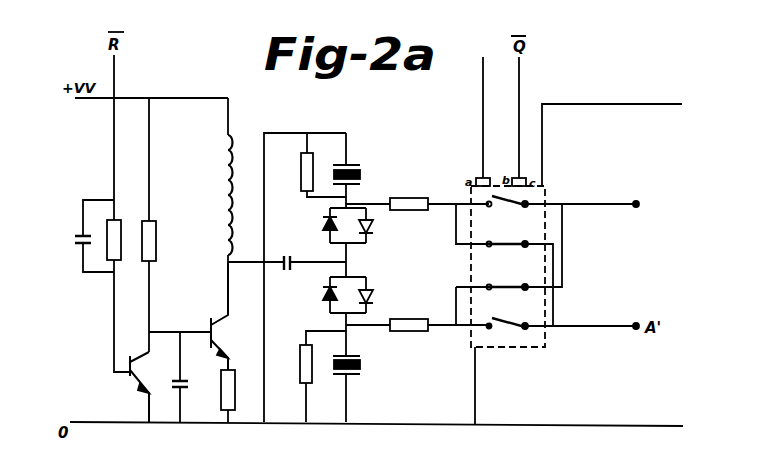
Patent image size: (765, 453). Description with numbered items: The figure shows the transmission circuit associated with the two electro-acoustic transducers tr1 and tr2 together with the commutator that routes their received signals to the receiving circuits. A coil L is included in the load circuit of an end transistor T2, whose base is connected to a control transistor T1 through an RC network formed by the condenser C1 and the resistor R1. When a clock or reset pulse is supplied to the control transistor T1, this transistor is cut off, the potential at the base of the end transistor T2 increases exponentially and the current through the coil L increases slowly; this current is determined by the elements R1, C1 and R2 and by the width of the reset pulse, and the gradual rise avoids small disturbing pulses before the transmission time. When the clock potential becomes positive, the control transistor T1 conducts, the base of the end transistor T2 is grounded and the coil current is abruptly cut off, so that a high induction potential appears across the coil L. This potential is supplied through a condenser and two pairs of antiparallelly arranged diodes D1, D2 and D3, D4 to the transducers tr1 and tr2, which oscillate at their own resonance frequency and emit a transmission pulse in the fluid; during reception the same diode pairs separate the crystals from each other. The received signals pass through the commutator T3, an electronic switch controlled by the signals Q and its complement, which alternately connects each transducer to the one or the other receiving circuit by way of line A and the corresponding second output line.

The resistor of RC network R1 is at (162, 225).
The resistor R2 is at (241, 396).
The condenser of RC network C1 is at (190, 377).
The control transistor T1 is at (133, 378).
The end transistor T2 is at (188, 316).
The commutator T3 is at (511, 361).
The coil L is at (236, 180).
The first transducer tr1 is at (366, 170).
The second transducer tr2 is at (366, 389).
The antiparallel diode D1 is at (318, 225).
The antiparallel diode D2 is at (378, 225).
The antiparallel diode D3 is at (318, 295).
The antiparallel diode D4 is at (378, 295).
The control signal Q is at (483, 108).
The line A is at (591, 206).